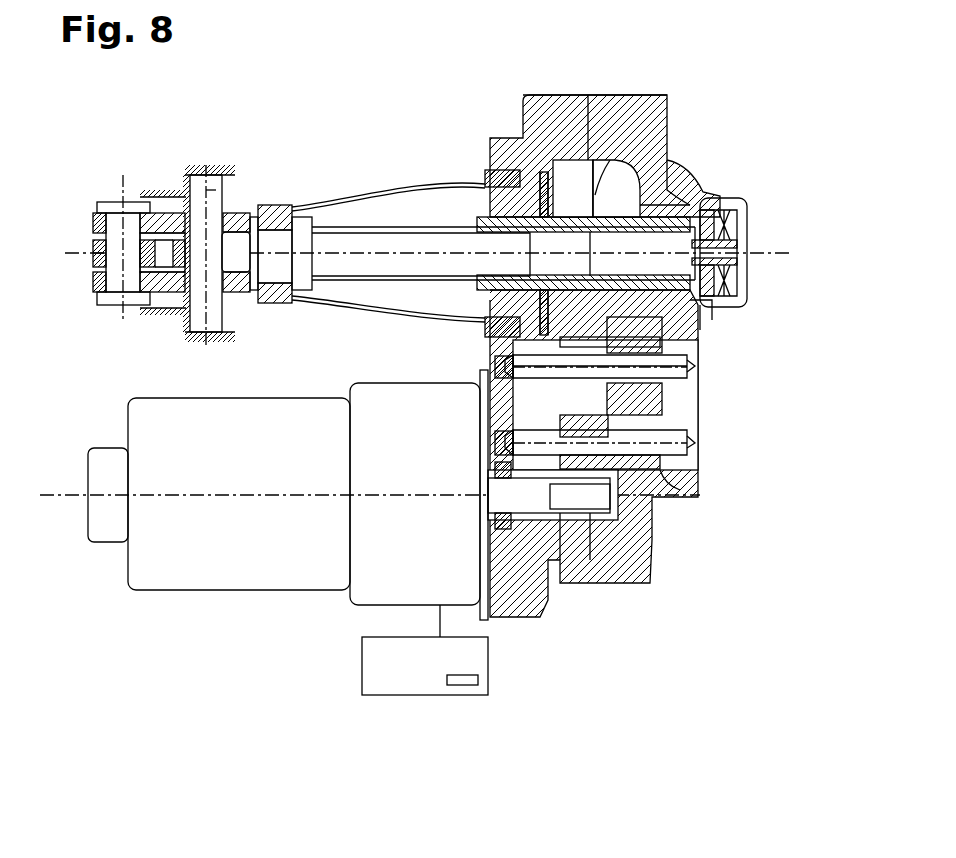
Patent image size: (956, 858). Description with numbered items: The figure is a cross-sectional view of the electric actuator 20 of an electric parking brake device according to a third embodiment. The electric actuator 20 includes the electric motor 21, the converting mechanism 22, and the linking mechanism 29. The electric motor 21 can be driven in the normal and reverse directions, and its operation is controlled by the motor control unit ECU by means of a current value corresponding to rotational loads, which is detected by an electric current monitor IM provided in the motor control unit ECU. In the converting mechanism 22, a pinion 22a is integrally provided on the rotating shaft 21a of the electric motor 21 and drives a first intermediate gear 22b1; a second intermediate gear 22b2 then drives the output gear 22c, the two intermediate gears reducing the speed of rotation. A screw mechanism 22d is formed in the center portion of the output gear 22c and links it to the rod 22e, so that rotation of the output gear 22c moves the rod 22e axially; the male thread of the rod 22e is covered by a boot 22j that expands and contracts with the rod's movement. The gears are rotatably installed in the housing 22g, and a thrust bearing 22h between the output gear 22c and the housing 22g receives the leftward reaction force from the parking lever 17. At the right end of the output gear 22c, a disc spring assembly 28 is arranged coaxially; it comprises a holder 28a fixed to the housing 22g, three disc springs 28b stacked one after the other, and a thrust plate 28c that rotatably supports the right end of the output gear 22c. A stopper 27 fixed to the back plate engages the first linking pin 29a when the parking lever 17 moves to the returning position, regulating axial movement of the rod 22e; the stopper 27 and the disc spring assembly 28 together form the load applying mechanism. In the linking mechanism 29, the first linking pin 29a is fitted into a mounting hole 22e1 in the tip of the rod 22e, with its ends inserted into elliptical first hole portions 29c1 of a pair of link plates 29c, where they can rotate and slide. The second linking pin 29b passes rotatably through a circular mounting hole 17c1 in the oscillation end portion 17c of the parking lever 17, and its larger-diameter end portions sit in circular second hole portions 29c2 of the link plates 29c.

The electric actuator 20 is at (567, 88).
The electric motor 21 is at (318, 594).
The rotating shaft 21a is at (480, 497).
The converting mechanism 22 is at (655, 148).
The pinion 22a is at (567, 508).
The first intermediate gear 22b1 is at (612, 480).
The second intermediate gear 22b2 is at (660, 400).
The output gear 22c is at (614, 160).
The screw mechanism 22d is at (488, 200).
The rod 22e is at (383, 268).
The mounting hole 22e1 is at (233, 288).
The housing 22g is at (655, 172).
The thrust bearing 22h is at (497, 362).
The boot 22j is at (394, 188).
The stopper 27 is at (216, 168).
The disc spring assembly 28 is at (722, 206).
The holder 28a is at (735, 240).
The disc springs 28b is at (715, 300).
The thrust plate 28c is at (700, 308).
The linking mechanism 29 is at (174, 202).
The first linking pin 29a is at (216, 192).
The second linking pin 29b is at (116, 213).
The link plates 29c is at (93, 222).
The first hole portions 29c1 is at (233, 222).
The second hole portions 29c2 is at (140, 220).
The parking lever 17 is at (170, 300).
The oscillation end portion 17c is at (93, 250).
The mounting hole 17c1 is at (93, 262).
The motor control unit ECU is at (362, 672).
The electric current monitor IM is at (463, 686).